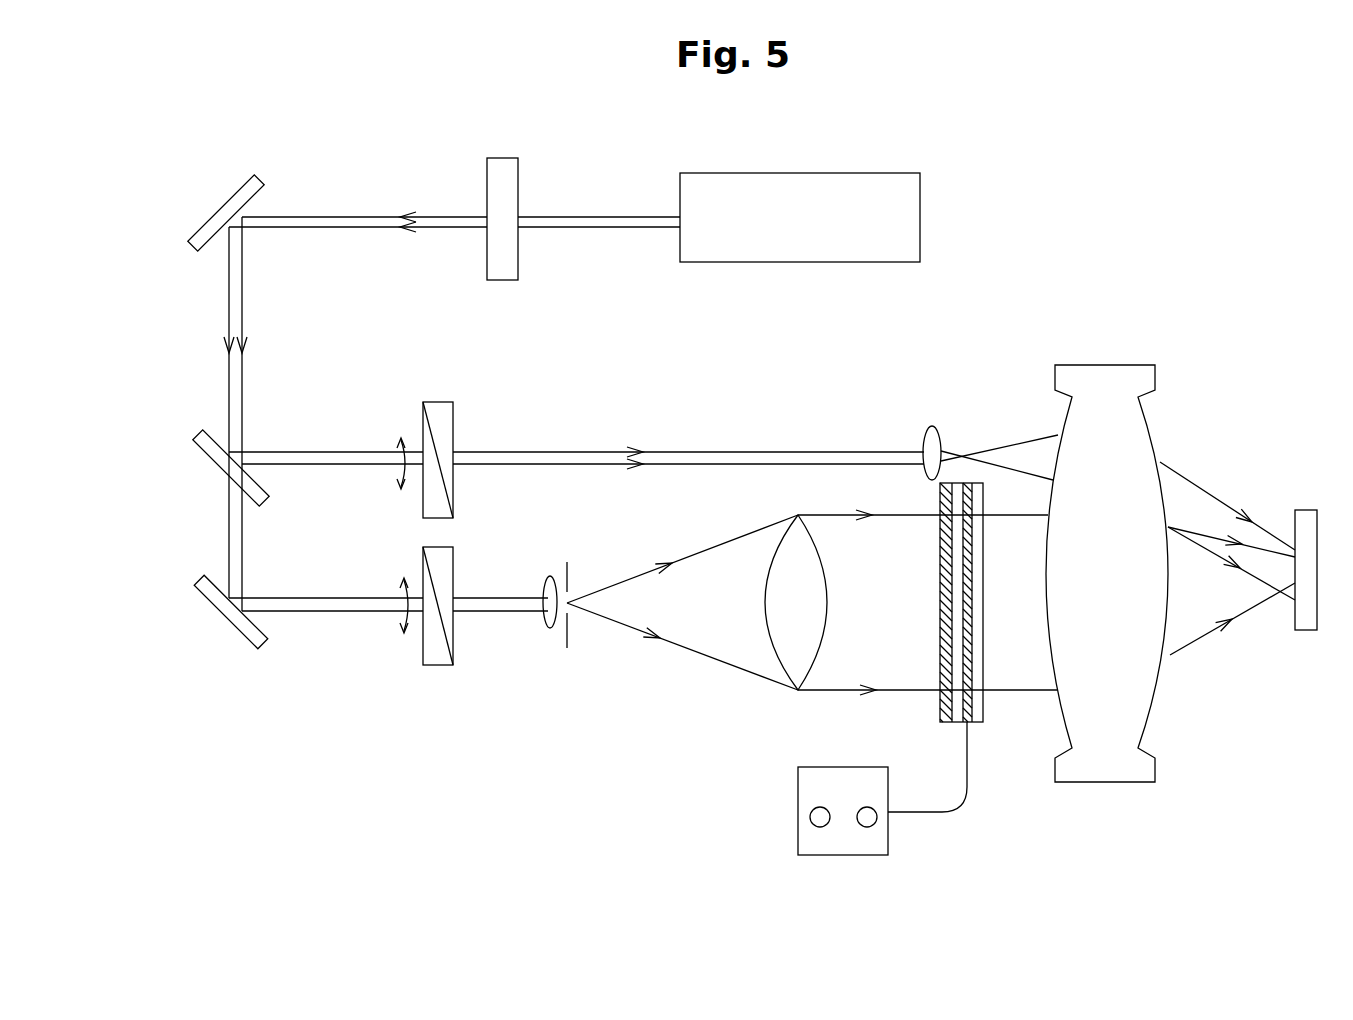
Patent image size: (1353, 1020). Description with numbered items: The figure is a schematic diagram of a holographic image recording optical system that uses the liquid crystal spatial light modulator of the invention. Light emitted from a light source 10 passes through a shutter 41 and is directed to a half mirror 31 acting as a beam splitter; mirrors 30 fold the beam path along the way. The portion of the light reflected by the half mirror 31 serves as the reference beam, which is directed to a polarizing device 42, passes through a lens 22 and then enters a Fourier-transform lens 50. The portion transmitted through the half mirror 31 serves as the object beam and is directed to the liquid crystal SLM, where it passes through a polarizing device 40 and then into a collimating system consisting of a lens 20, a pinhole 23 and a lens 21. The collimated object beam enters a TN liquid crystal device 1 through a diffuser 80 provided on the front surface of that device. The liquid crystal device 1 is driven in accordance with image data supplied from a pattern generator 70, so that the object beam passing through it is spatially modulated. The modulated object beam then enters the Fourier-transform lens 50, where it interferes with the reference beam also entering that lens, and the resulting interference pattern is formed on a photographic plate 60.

The TN liquid crystal device 1 is at (967, 483).
The light source 10 is at (783, 262).
The lens 20 is at (550, 628).
The lens 21 is at (795, 692).
The lens 22 is at (935, 428).
The pinhole 23 is at (568, 635).
The mirror 30 is at (257, 183).
The half mirror 31 is at (205, 465).
The polarizing device 40 is at (432, 667).
The shutter 41 is at (485, 283).
The polarizing device 42 is at (425, 407).
The Fourier-transform lens 50 is at (1088, 768).
The photographic plate 60 is at (1305, 628).
The pattern generator 70 is at (798, 807).
The diffuser 80 is at (943, 498).